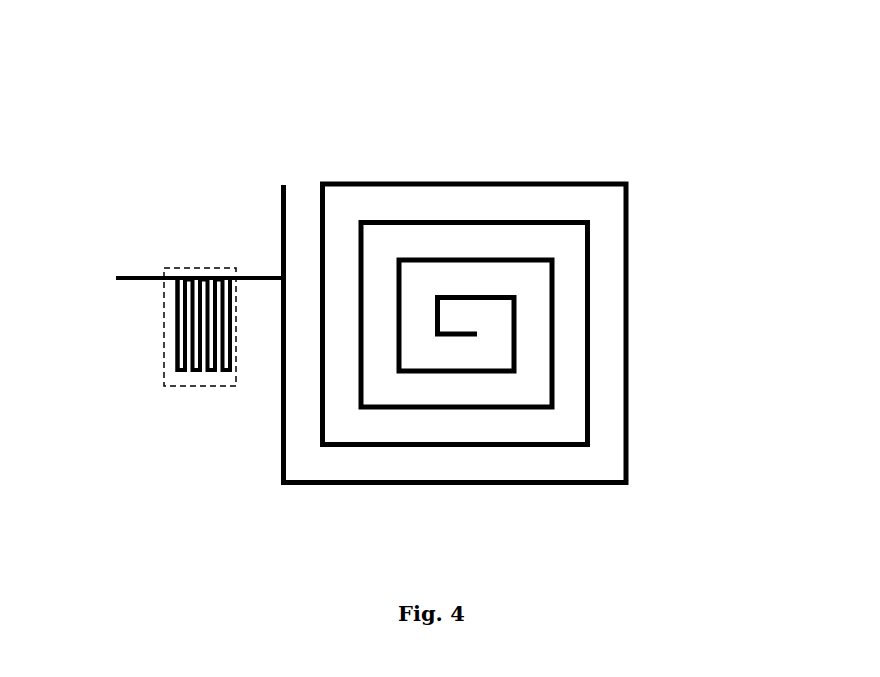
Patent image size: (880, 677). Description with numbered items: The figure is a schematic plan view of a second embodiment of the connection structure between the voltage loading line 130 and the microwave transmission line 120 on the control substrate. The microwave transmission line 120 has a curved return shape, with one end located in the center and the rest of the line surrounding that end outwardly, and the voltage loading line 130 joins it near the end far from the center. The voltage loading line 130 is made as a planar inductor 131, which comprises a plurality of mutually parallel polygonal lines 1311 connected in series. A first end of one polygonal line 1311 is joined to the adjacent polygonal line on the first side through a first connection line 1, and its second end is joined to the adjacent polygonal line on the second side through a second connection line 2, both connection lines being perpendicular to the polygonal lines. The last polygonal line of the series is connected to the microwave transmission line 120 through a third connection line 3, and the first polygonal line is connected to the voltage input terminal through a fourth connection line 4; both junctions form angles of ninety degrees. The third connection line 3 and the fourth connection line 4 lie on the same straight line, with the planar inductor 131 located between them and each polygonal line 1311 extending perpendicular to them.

The microwave transmission line 120 is at (466, 153).
The voltage loading line 130 is at (156, 337).
The planar inductor 131 is at (165, 338).
The polygonal line 1311 is at (175, 358).
The first connection line 1 is at (178, 371).
The second connection line 2 is at (188, 277).
The third connection line 3 is at (248, 276).
The fourth connection line 4 is at (120, 279).